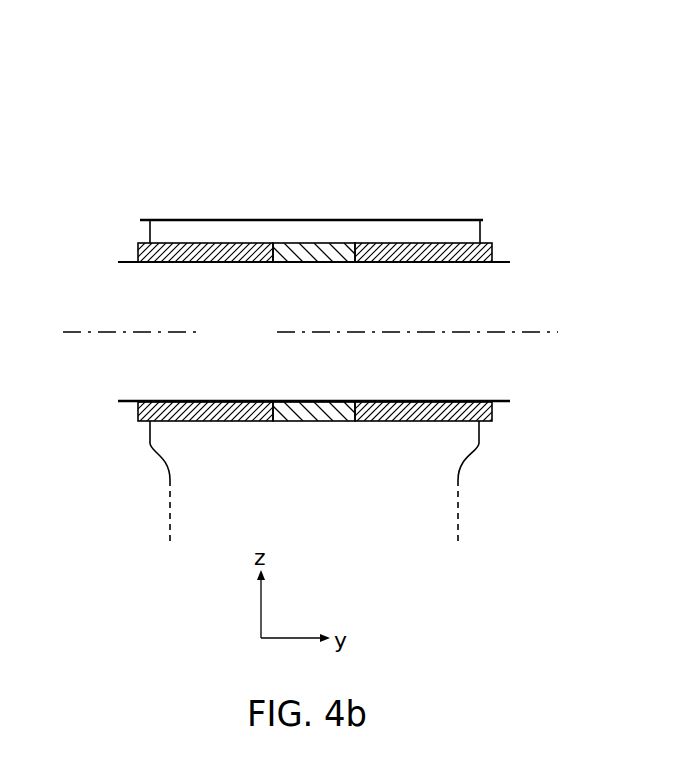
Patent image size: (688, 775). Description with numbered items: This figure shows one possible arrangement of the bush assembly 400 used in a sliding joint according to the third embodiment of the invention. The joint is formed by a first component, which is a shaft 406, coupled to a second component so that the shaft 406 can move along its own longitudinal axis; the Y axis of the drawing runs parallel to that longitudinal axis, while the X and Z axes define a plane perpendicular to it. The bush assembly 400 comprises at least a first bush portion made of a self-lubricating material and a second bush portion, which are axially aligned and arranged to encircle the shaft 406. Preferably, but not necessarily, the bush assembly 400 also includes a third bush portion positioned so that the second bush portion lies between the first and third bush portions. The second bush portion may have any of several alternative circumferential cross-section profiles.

The bush assembly 400 is at (177, 95).
The first component 406 is at (260, 344).